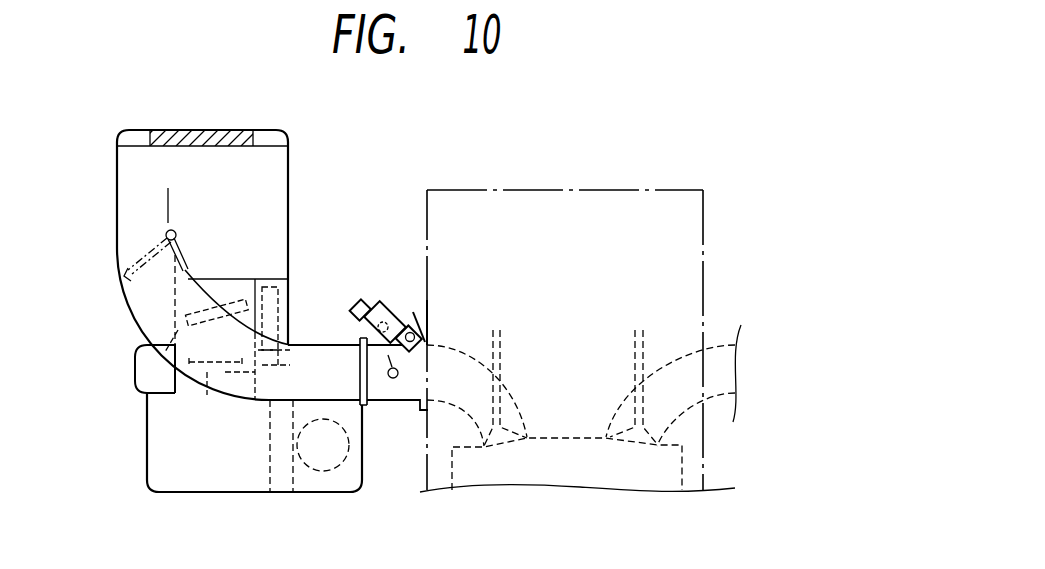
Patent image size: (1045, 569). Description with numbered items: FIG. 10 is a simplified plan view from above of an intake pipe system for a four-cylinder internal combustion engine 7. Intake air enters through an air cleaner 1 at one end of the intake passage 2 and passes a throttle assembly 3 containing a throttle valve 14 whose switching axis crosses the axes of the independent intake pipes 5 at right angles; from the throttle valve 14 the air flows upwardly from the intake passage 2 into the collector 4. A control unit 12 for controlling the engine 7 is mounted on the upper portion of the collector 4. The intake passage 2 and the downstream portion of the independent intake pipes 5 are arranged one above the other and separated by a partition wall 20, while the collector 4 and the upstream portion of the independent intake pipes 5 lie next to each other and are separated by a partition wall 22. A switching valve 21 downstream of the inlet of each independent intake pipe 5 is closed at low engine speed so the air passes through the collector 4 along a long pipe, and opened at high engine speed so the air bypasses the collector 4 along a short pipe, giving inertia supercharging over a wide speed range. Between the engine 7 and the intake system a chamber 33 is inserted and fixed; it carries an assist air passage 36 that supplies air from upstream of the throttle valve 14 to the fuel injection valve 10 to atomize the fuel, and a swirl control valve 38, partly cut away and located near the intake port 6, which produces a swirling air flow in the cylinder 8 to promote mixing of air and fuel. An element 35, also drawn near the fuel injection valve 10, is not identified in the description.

The air cleaner 1 is at (283, 480).
The intake passage 2 is at (195, 478).
The throttle assembly 3 is at (179, 311).
The collector 4 is at (291, 151).
The independent intake pipes 5 is at (120, 233).
The intake port 6 is at (455, 352).
The engine 7 is at (597, 213).
The cylinder 8 is at (597, 483).
The fuel injection valve 10 is at (365, 303).
The control unit 12 is at (200, 131).
The throttle valve 14 is at (176, 363).
The partition wall 20 is at (333, 398).
The switching valve 21 is at (177, 268).
The partition wall 22 is at (165, 200).
The chamber 33 is at (380, 403).
The sensing element 35 is at (383, 320).
The assist air passage 36 is at (411, 308).
The swirl control valve 38 is at (397, 378).